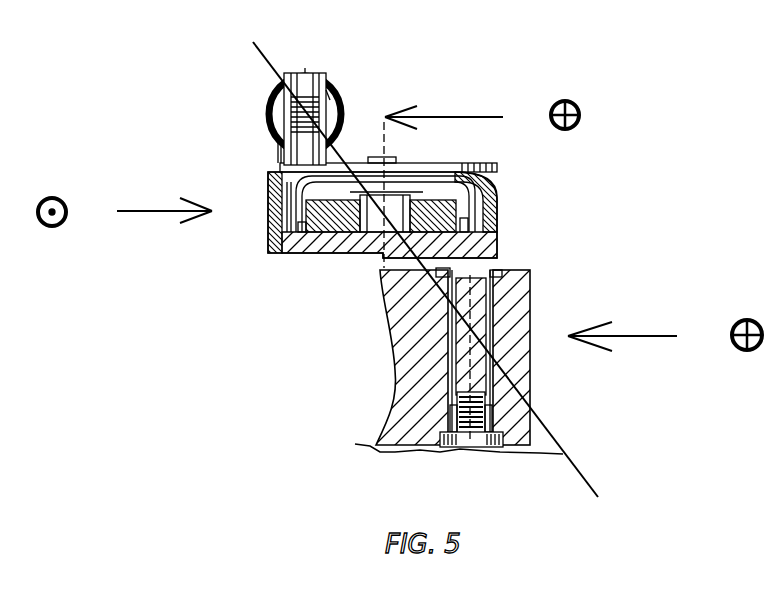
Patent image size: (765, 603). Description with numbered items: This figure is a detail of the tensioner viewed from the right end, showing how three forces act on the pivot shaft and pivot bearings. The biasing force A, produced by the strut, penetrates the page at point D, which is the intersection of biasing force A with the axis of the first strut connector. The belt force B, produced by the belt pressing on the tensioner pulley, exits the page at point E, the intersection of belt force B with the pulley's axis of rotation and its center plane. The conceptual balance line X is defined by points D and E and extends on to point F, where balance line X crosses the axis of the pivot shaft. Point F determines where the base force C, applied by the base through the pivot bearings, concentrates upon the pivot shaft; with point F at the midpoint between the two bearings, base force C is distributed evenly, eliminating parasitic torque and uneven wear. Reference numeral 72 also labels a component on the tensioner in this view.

The cam follower bearing 72 is at (267, 117).
The balance line X is at (270, 60).
The point D is at (340, 97).
The point E is at (362, 218).
The point F is at (470, 330).
The biasing force A is at (482, 115).
The belt force B is at (125, 212).
The base force C is at (665, 335).